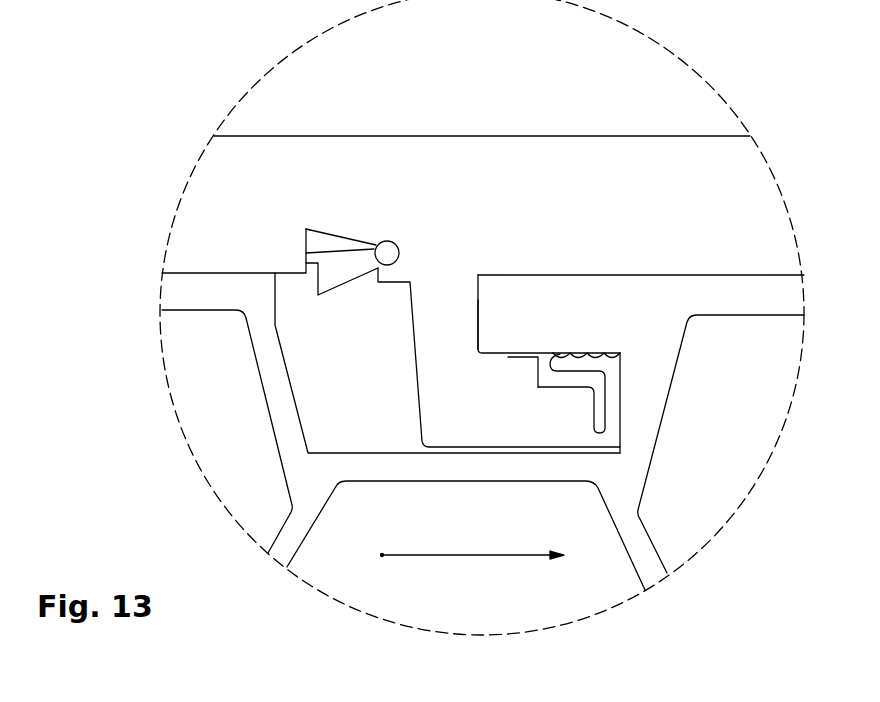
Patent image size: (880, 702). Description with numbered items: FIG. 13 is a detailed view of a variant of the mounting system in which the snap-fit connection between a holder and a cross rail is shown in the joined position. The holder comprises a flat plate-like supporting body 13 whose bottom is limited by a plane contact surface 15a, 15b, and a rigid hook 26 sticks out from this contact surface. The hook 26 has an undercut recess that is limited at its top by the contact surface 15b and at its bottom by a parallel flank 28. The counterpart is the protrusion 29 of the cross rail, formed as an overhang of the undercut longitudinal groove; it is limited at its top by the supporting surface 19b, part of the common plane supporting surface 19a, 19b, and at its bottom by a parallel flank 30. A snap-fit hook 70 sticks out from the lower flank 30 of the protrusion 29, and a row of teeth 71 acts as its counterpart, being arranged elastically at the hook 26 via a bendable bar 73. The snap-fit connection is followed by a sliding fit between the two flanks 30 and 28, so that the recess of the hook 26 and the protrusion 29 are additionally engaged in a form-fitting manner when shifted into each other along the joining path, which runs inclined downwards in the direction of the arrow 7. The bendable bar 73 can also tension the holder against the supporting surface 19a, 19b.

The arrow 7 is at (463, 553).
The supporting body 13 is at (487, 165).
The contact surface 15a is at (222, 286).
The contact surface 15b is at (755, 289).
The supporting surface 19a is at (231, 263).
The supporting surface 19b is at (716, 268).
The hook 26 is at (440, 360).
The flank 28 is at (508, 358).
The protrusion 29 is at (561, 318).
The flank 30 is at (520, 348).
The snap-fit hook 70 is at (562, 350).
The row of teeth 71 is at (588, 355).
The bendable bar 73 is at (613, 405).